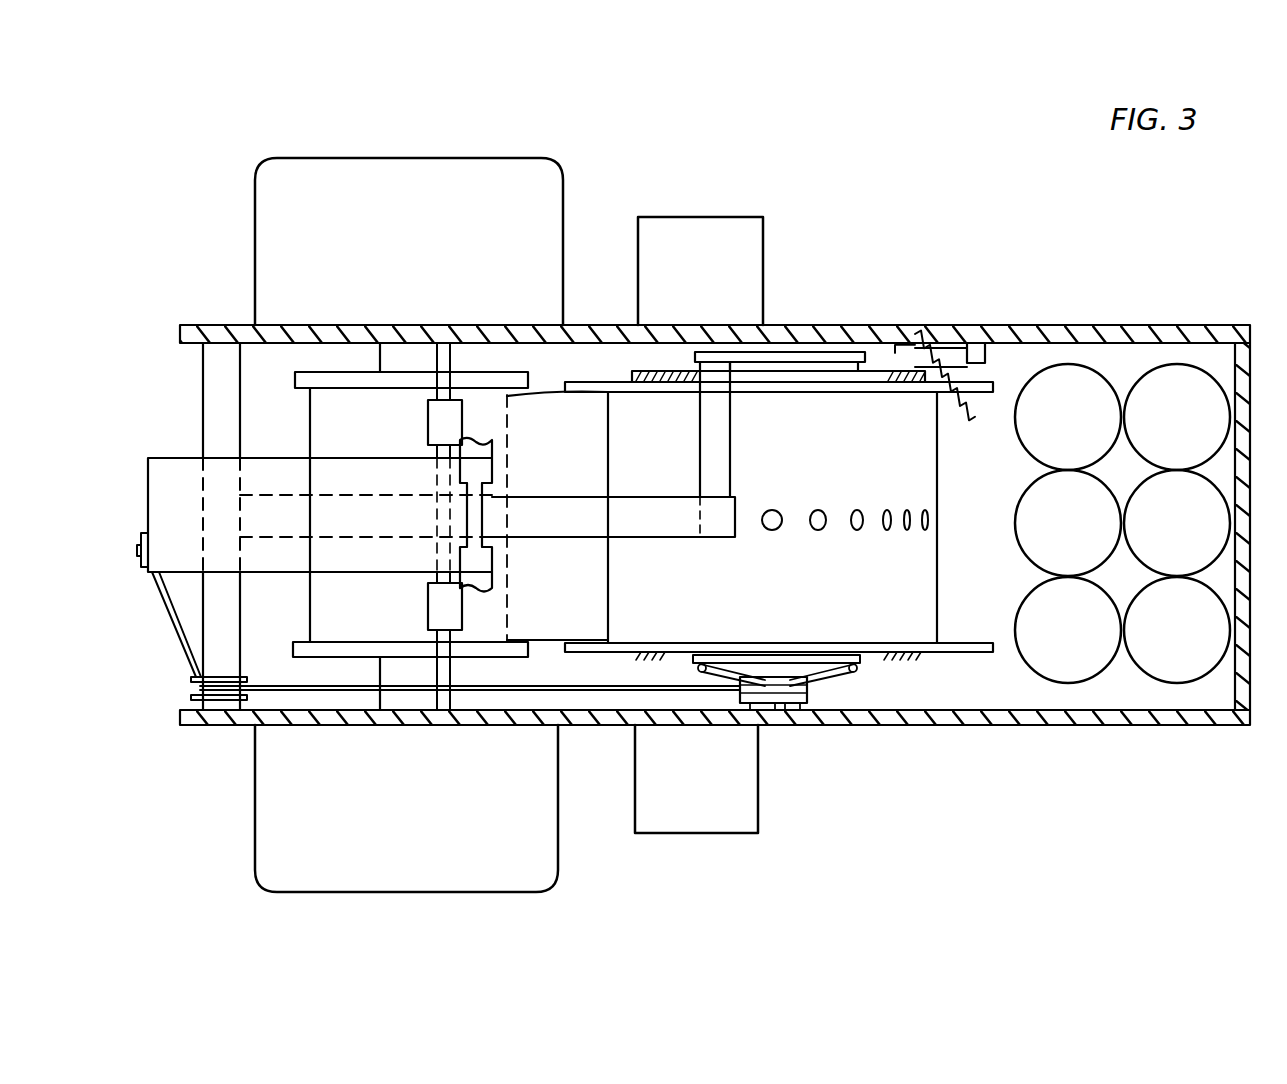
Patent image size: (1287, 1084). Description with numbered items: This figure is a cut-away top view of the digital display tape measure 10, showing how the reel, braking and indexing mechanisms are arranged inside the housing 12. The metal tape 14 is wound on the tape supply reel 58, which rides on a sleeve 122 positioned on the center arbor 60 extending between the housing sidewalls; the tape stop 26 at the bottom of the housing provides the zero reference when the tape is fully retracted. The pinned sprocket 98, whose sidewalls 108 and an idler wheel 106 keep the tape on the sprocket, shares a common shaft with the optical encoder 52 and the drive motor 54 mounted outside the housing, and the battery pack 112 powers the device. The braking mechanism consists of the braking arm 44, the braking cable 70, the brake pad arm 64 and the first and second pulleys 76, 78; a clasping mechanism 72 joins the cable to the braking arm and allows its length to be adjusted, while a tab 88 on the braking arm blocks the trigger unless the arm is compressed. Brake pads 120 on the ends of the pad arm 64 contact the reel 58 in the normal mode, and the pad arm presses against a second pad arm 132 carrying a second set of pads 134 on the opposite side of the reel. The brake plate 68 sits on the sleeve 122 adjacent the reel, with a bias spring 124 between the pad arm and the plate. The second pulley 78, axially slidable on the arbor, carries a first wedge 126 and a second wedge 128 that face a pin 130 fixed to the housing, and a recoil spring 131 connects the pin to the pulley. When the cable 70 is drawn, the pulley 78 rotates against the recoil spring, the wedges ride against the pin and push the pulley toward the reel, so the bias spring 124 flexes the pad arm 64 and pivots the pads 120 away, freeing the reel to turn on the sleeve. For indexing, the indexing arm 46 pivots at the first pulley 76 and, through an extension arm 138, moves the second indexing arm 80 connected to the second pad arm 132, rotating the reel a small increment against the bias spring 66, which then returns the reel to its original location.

The digital display tape measure 10 is at (905, 228).
The housing 12 is at (1068, 325).
The metal tape 14 is at (573, 600).
The tape stop 26 is at (758, 800).
The braking arm 44 is at (302, 573).
The indexing arm 46 is at (640, 520).
The optical encoder 52 is at (558, 855).
The drive motor 54 is at (563, 195).
The tape supply reel 58 is at (953, 392).
The center arbor 60 is at (787, 352).
The brake pad arm 64 is at (880, 668).
The bias spring 66 is at (950, 343).
The brake plate 68 is at (870, 652).
The braking cable 70 is at (180, 625).
The clasping mechanism 72 is at (152, 570).
The first pulley 76 is at (192, 697).
The second pulley 78 is at (810, 682).
The second indexing arm 80 is at (855, 355).
The tab 88 is at (478, 510).
The pinned sprocket 98 is at (310, 432).
The idler wheel 106 is at (428, 430).
The sidewalls 108 is at (480, 380).
The battery pack 112 is at (1016, 525).
The brake pads 120 is at (640, 655).
The sleeve 122 is at (790, 382).
The bias spring 124 is at (790, 664).
The first wedge 126 is at (805, 703).
The second wedge 128 is at (750, 728).
The pin 130 is at (780, 728).
The recoil spring 131 is at (775, 728).
The second pad arm 132 is at (850, 382).
The second set of pads 134 is at (635, 377).
The extension arm 138 is at (725, 462).